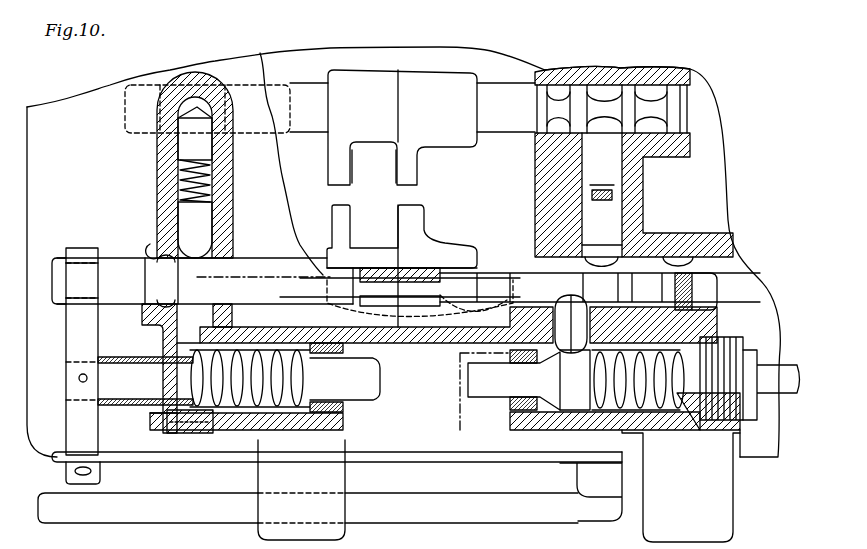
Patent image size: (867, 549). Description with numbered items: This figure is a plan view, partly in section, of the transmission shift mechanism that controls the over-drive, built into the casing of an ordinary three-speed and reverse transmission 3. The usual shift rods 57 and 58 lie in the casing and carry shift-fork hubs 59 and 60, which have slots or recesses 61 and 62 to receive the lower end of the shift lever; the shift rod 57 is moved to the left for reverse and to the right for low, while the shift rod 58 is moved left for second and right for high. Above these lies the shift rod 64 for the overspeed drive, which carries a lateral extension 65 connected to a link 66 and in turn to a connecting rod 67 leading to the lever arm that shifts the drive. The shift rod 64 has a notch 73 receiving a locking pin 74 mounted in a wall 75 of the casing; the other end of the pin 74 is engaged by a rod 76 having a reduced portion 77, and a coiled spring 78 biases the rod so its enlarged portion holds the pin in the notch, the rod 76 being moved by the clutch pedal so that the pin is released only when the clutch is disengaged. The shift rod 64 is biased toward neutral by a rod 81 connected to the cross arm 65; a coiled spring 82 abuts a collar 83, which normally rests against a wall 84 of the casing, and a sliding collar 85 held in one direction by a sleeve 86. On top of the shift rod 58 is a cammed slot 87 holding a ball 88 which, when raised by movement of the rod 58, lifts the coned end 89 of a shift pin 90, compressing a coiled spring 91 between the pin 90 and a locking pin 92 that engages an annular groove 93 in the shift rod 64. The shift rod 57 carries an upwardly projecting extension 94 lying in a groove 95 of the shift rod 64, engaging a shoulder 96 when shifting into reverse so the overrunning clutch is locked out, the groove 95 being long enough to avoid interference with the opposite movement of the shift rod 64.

The transmission 3 is at (57, 115).
The shift rod 57 is at (495, 262).
The shift rod 58 is at (520, 118).
The hub 59 is at (402, 127).
The hub 60 is at (402, 257).
The slot or recess 61 is at (352, 176).
The slot or recess 62 is at (350, 228).
The shift rod 64 is at (258, 263).
The lateral extension 65 is at (73, 345).
The link 66 is at (178, 462).
The connecting rod 67 is at (445, 512).
The notch 73 is at (557, 295).
The locking pin 74 is at (673, 310).
The wall 75 is at (670, 325).
The rod 76 is at (575, 380).
The reduced portion 77 is at (503, 380).
The coiled spring 78 is at (655, 407).
The rod 81 is at (360, 392).
The coiled spring 82 is at (245, 433).
The collar 83 is at (312, 370).
The wall 84 is at (302, 430).
The sliding collar 85 is at (190, 405).
The sleeve 86 is at (130, 347).
The cammed slot 87 is at (178, 92).
The ball 88 is at (205, 100).
The coned end 89 is at (175, 115).
The shift pin 90 is at (183, 150).
The coiled spring 91 is at (178, 177).
The locking pin 92 is at (185, 222).
The annular groove 93 is at (157, 248).
The upwardly projecting extension 94 is at (433, 310).
The groove 95 is at (458, 345).
The shoulder 96 is at (325, 300).